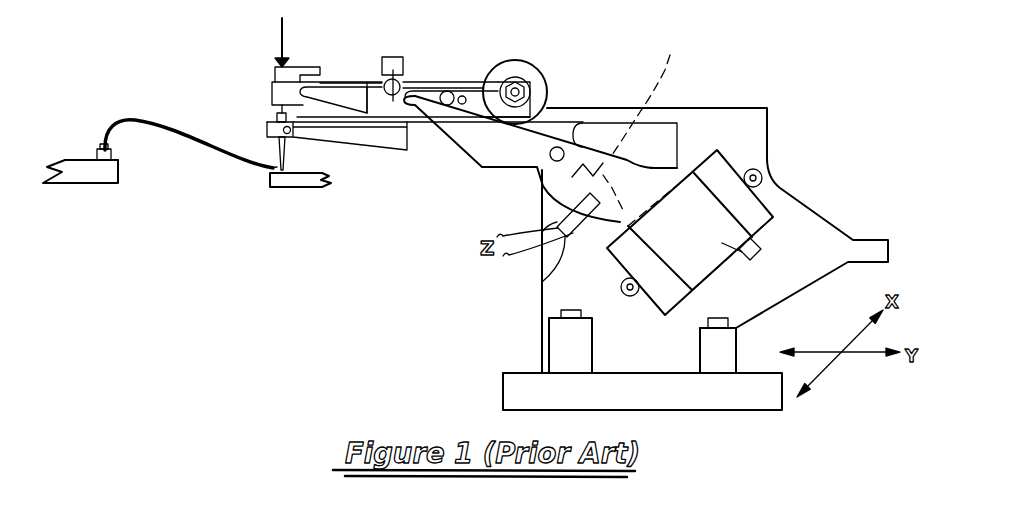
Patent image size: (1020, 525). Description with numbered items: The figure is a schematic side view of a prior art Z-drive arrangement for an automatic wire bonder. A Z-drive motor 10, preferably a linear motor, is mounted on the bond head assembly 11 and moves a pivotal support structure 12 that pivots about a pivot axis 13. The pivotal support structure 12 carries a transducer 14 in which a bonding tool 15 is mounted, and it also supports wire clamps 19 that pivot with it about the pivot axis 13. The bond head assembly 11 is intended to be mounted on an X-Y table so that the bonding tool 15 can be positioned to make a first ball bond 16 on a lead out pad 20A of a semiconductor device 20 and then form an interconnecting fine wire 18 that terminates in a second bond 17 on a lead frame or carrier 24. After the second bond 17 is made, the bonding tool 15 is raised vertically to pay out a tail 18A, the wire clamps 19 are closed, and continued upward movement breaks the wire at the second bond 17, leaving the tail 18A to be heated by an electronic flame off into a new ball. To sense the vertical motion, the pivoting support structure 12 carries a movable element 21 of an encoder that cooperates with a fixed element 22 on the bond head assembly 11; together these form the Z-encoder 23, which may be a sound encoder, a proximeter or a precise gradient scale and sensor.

The Z-drive motor 10 is at (752, 260).
The bond head assembly 11 is at (758, 89).
The pivotal support structure 12 is at (453, 117).
The pivot axis 13 is at (560, 143).
The transducer 14 is at (375, 139).
The bonding tool 15 is at (289, 143).
The first ball bond 16 is at (100, 146).
The second bond 17 is at (278, 167).
The interconnecting fine wire 18 is at (170, 141).
The tail 18A is at (275, 166).
The wire clamps 19 is at (333, 83).
The semiconductor device 20 is at (80, 182).
The lead out pad 20A is at (120, 178).
The movable element of encoder 21 is at (628, 122).
The fixed element 22 is at (575, 235).
The Z-encoder 23 is at (510, 206).
The lead frame or carrier 24 is at (293, 183).